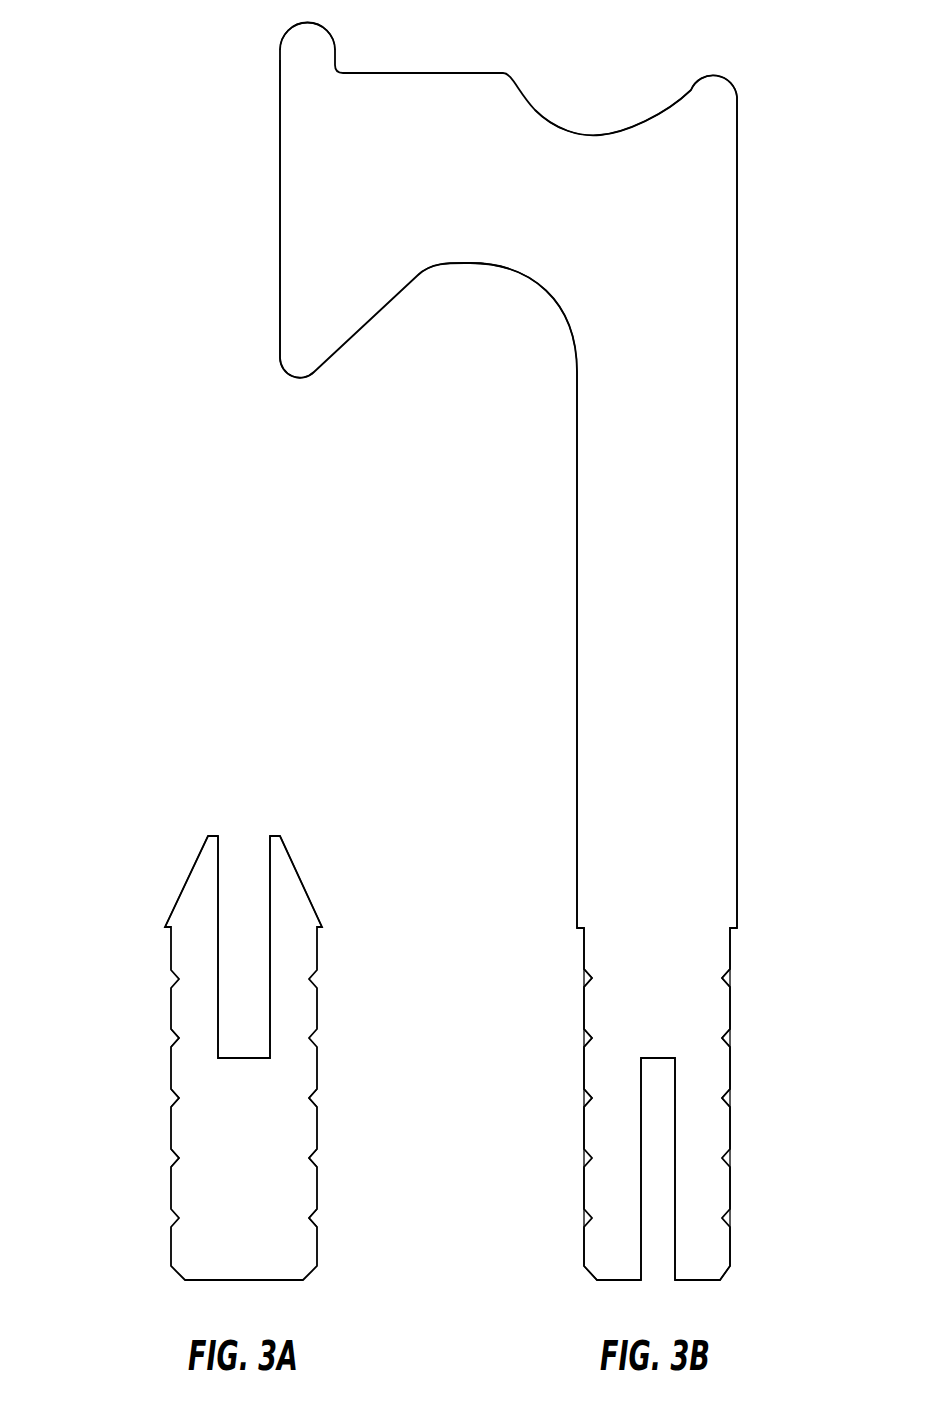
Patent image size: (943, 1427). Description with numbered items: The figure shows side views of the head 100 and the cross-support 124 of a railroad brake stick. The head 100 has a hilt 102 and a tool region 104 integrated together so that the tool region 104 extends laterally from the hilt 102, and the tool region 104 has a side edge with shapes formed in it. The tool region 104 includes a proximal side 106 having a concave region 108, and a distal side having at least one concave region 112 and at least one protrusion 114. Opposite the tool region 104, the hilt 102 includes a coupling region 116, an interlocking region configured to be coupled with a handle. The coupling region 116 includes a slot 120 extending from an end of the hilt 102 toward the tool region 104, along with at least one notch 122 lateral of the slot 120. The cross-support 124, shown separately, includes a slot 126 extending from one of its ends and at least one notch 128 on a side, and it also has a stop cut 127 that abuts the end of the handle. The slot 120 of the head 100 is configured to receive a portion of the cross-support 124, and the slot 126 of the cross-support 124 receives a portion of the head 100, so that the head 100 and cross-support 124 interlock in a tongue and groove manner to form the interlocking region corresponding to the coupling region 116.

In FIG. 3B, the head 100 is at (85, 80).
In FIG. 3B, the hilt 102 is at (755, 512).
In FIG. 3B, the tool region 104 is at (262, 274).
In FIG. 3B, the proximal side 106 is at (333, 380).
In FIG. 3B, the concave region 108 is at (492, 290).
In FIG. 3B, the concave region 112 is at (605, 135).
In FIG. 3B, the protrusion 114 is at (307, 60).
In FIG. 3B, the coupling region 116 is at (745, 1268).
In FIG. 3B, the slot 120 is at (657, 1280).
In FIG. 3B, the notch 122 is at (580, 977).
In FIG. 3A, the cross-support 124 is at (118, 838).
In FIG. 3A, the slot 126 is at (243, 836).
In FIG. 3A, the stop cut 127 is at (163, 940).
In FIG. 3A, the notch 128 is at (168, 1037).